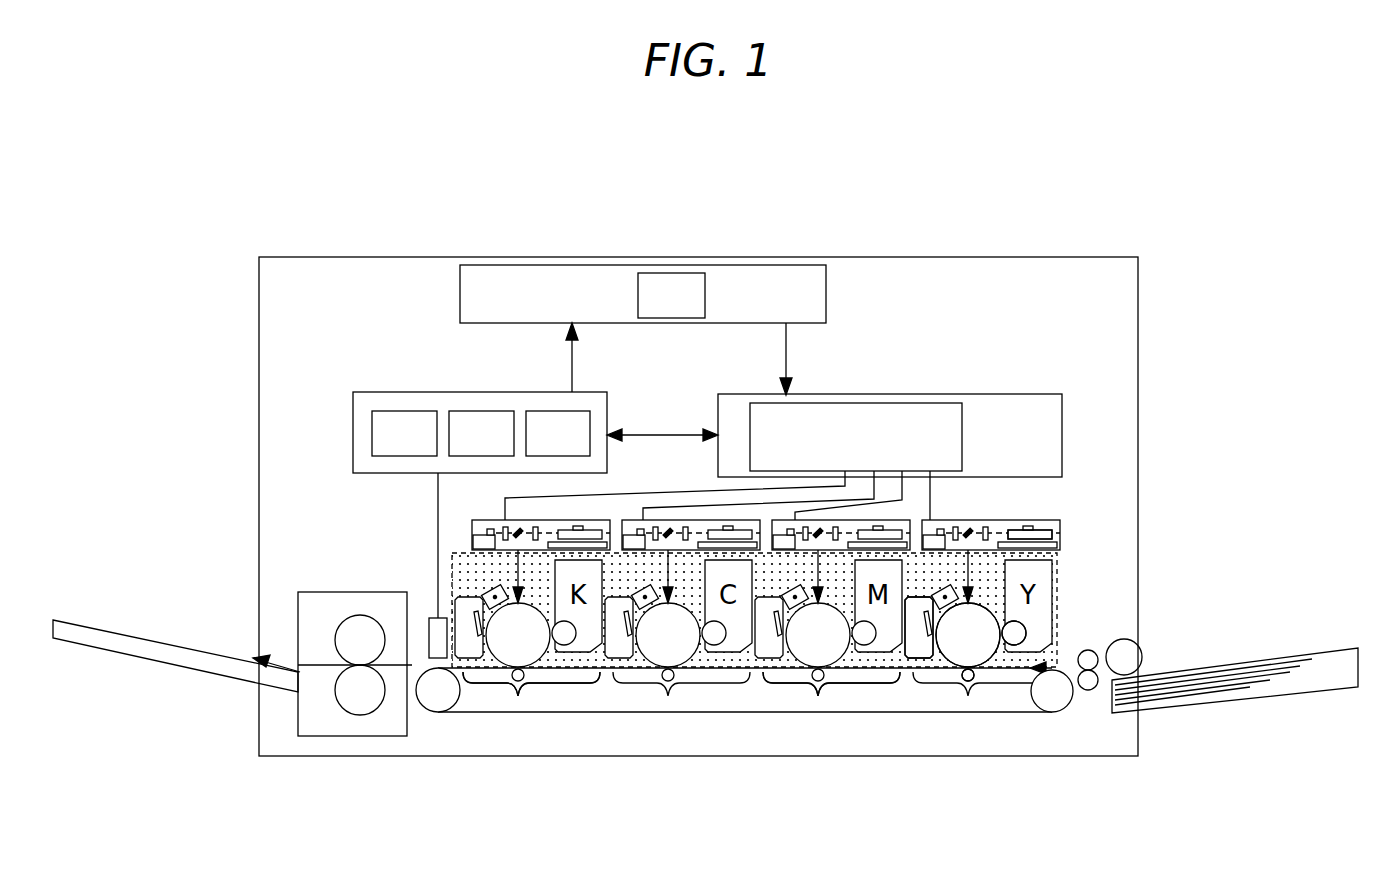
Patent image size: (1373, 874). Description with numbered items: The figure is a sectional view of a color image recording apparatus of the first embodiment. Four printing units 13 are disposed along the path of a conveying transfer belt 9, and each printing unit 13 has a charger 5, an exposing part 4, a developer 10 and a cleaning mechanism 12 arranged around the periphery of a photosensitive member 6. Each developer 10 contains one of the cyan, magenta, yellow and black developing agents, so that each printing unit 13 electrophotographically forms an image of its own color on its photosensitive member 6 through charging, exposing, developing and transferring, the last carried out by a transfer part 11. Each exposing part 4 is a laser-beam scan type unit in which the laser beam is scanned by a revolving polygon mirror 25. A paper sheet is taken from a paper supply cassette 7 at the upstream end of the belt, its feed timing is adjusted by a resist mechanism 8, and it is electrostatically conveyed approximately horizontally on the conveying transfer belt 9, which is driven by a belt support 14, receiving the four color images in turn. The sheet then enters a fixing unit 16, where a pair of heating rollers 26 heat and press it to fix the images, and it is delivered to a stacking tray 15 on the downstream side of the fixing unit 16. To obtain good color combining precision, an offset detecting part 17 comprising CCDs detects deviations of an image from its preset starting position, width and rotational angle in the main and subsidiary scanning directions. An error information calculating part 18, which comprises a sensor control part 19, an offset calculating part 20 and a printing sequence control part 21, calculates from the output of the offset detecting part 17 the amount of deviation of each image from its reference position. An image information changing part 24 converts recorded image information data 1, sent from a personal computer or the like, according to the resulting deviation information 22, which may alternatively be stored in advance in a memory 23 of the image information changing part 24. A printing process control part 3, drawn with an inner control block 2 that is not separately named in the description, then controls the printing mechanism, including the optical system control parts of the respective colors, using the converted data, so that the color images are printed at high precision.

The recorded image information data 1 is at (995, 194).
The image processing section 2 is at (870, 401).
The printing process control part 3 is at (1063, 427).
The exposing part 4 is at (1047, 520).
The charger 5 is at (957, 590).
The photosensitive member 6 is at (975, 626).
The paper supply cassette 7 is at (1267, 662).
The resist mechanism 8 is at (1088, 690).
The conveying transfer belt 9 is at (1052, 712).
The developer 10 is at (1016, 645).
The transfer part 11 is at (968, 682).
The cleaning mechanism 12 is at (930, 653).
The printing unit 13 is at (518, 697).
The belt support 14 is at (440, 698).
The stacking tray 15 is at (203, 648).
The fixing unit 16 is at (352, 592).
The offset detecting part 17 is at (437, 618).
The error information calculating part 18 is at (363, 393).
The sensor control part 19 is at (404, 420).
The offset calculating part 20 is at (468, 420).
The printing sequence control part 21 is at (556, 420).
The deviation information 22 is at (578, 348).
The memory 23 is at (680, 285).
The image information changing part 24 is at (775, 265).
The polygon mirror 25 is at (1058, 533).
The heating rollers 26 is at (362, 694).